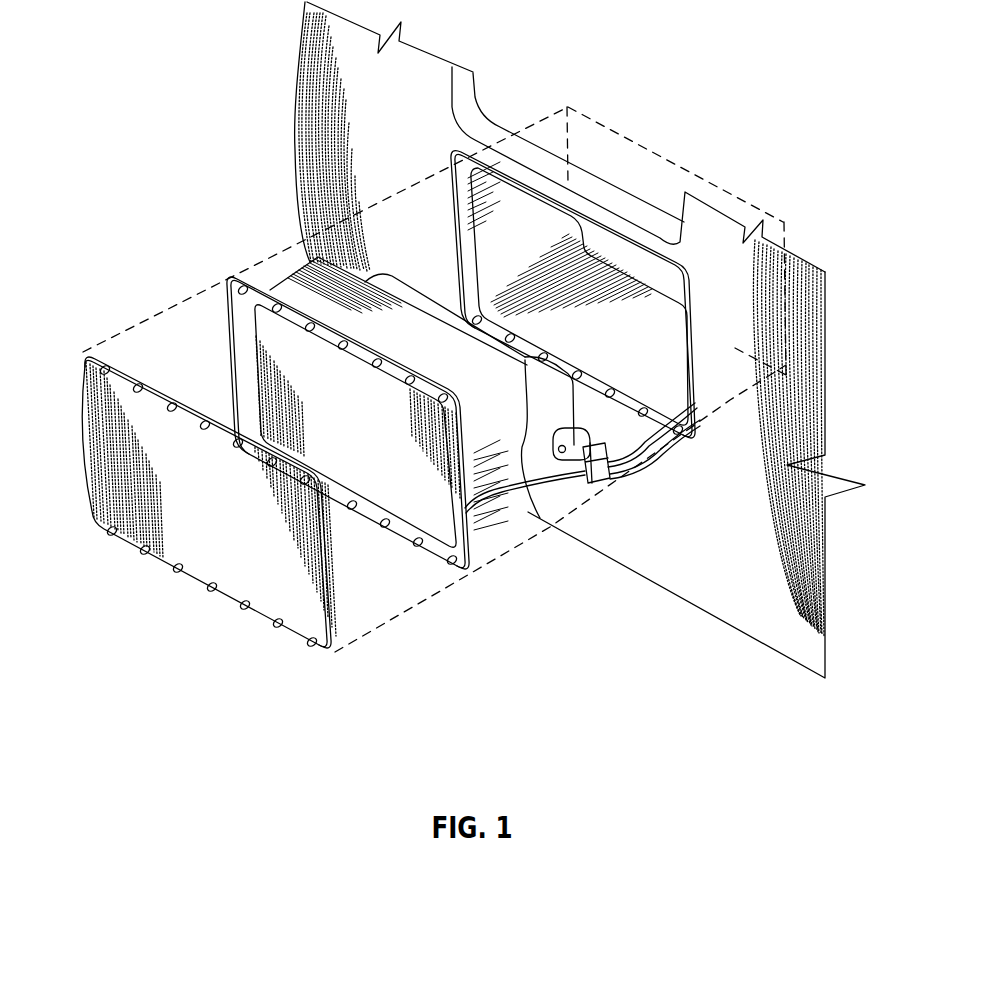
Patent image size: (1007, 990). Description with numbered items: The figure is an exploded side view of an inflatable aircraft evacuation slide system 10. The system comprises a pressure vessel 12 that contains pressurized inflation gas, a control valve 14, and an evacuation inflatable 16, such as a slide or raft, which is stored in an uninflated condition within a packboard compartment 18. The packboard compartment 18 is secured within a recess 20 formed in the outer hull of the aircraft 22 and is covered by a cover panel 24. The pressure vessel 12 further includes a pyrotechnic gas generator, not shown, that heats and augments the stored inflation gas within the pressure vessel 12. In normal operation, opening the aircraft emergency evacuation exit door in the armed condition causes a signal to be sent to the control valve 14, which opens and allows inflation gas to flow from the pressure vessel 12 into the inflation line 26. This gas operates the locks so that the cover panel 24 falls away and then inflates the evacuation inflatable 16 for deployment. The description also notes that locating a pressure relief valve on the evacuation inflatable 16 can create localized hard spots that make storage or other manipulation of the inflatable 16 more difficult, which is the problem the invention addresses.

The inflatable aircraft evacuation slide system 10 is at (163, 270).
The pressure vessel 12 is at (545, 383).
The control valve 14 is at (600, 487).
The evacuation inflatable 16 is at (277, 333).
The packboard compartment 18 is at (313, 280).
The recess 20 is at (487, 258).
The aircraft 22 is at (317, 103).
The cover panel 24 is at (103, 498).
The inflation line 26 is at (538, 478).